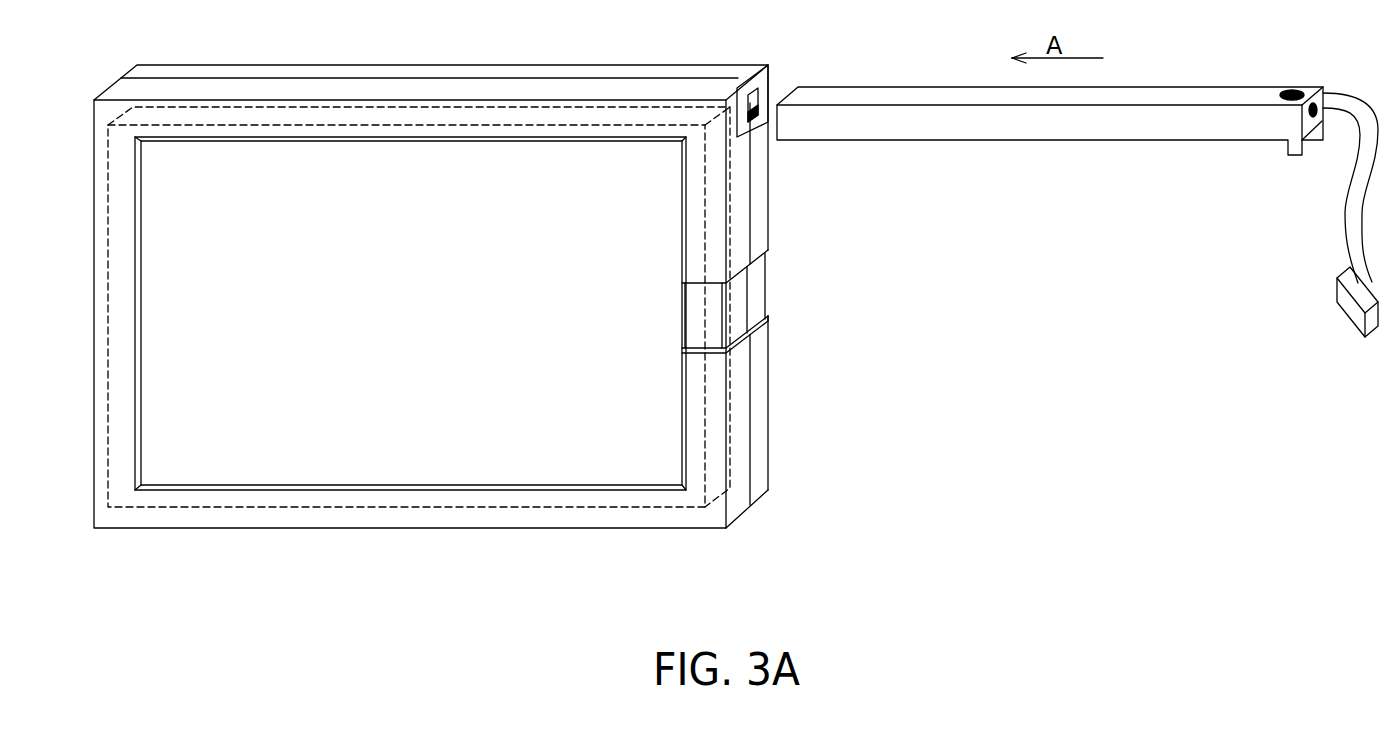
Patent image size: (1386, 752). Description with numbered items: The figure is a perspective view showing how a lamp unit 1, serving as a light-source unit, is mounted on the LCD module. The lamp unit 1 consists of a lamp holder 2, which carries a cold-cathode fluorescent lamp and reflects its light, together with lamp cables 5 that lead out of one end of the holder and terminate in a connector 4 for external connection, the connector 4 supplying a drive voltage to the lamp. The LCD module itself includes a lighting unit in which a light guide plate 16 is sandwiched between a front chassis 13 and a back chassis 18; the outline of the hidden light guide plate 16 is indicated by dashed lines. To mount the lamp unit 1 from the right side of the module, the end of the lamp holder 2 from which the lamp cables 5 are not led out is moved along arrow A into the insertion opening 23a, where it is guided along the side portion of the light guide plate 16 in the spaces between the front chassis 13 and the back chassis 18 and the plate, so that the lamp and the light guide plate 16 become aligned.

The lamp unit 1 is at (1011, 227).
The lamp holder 2 is at (1233, 97).
The connector 4 is at (1340, 295).
The lamp cables 5 is at (1345, 195).
The front chassis 13 is at (745, 430).
The light guide plate 16 is at (675, 498).
The back chassis 18 is at (765, 223).
The insertion opening 23a is at (746, 108).